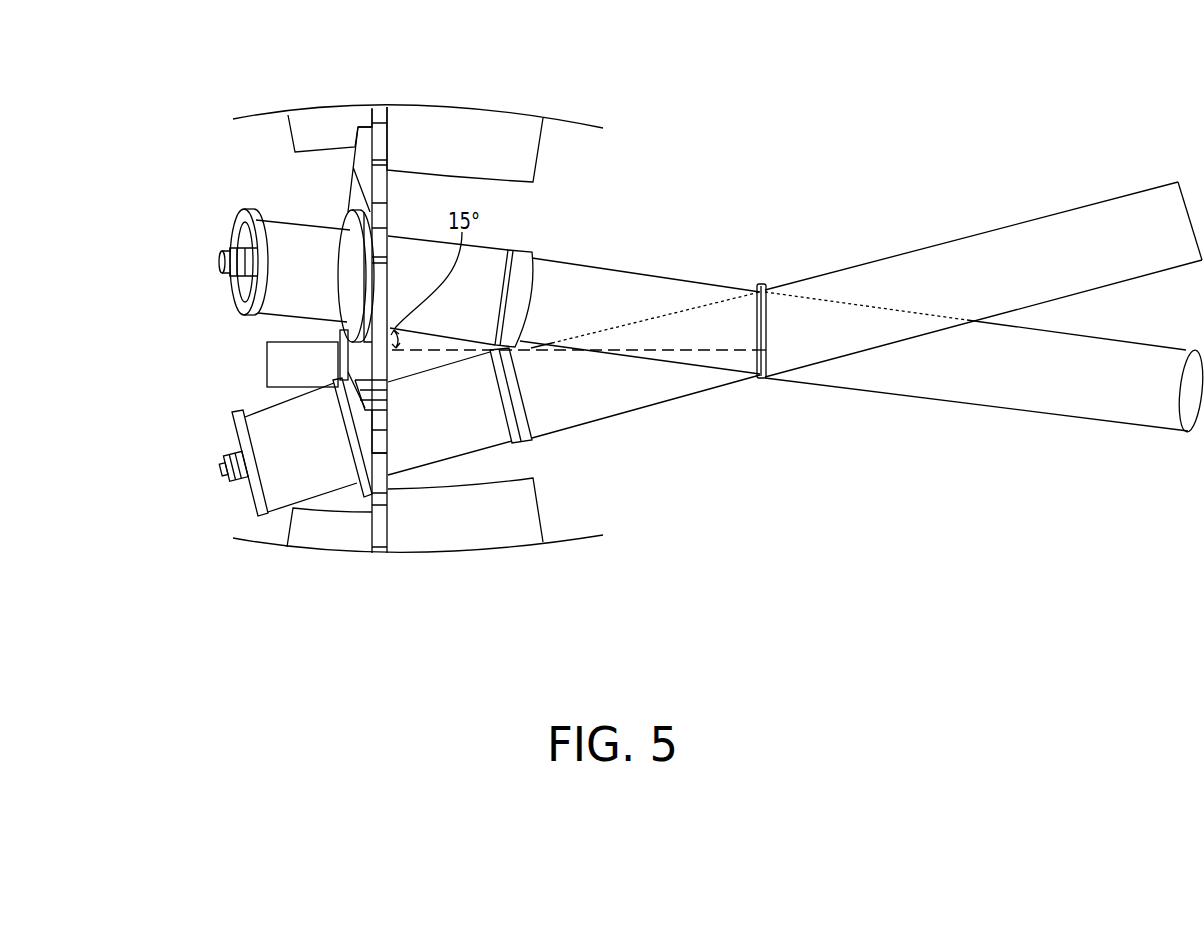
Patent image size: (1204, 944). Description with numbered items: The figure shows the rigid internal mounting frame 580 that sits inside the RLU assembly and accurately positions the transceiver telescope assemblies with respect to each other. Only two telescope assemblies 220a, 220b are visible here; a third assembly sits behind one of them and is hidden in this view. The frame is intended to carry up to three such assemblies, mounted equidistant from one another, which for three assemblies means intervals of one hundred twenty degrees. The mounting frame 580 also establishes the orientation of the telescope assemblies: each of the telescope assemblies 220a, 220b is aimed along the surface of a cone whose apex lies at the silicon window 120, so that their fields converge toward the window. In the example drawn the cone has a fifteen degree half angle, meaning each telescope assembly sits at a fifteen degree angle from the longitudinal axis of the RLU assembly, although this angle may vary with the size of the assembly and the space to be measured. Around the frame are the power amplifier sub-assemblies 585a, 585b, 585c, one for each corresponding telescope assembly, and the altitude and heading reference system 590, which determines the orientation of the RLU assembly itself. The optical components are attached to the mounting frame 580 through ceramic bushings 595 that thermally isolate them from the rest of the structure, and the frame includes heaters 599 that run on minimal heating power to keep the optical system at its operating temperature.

The mounting frame 580 is at (378, 104).
The power amplifier sub-assembly 585a is at (326, 542).
The power amplifier sub-assembly 585b is at (267, 358).
The power amplifier sub-assembly 585c is at (315, 112).
The altitude and heading reference system 590 is at (487, 127).
The ceramic bushing 595 is at (350, 211).
The heater 599 is at (455, 542).
The telescope assembly 220a is at (220, 258).
The telescope assembly 220b is at (222, 478).
The silicon window 120 is at (759, 382).